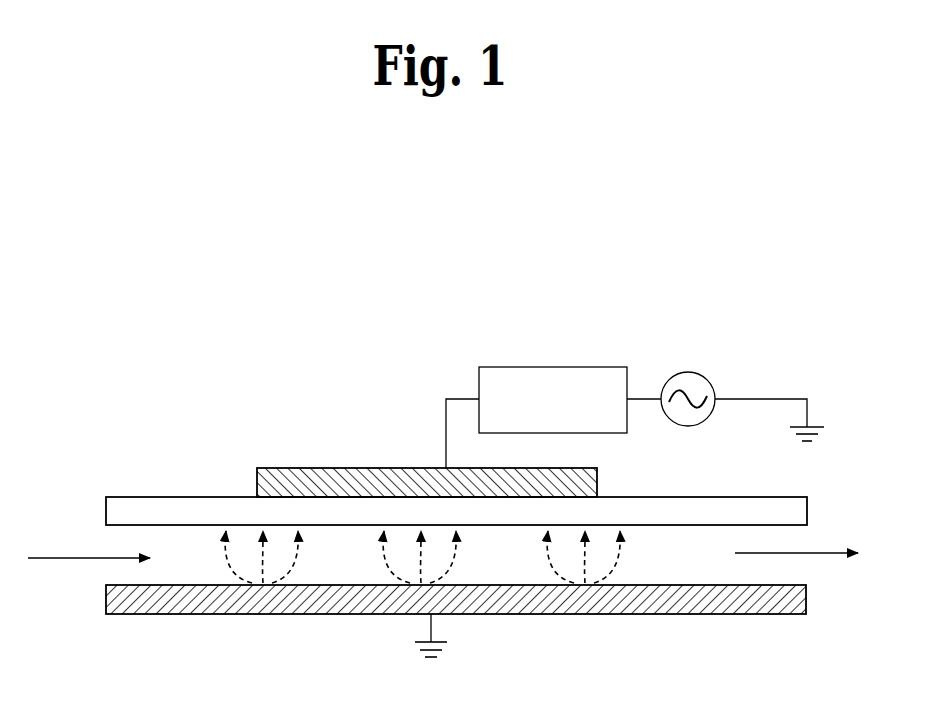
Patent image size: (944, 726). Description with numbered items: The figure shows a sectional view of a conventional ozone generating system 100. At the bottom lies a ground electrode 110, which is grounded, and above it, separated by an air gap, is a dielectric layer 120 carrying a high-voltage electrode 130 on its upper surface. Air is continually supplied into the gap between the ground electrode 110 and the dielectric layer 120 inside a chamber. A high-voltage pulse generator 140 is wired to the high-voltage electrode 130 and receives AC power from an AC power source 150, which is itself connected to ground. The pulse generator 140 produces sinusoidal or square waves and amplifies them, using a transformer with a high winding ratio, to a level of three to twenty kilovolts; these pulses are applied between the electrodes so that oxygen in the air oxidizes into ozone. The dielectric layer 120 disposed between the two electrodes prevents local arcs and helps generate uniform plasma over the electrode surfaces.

The ozone generating system 100 is at (790, 297).
The ground electrode 110 is at (170, 597).
The dielectric layer 120 is at (114, 506).
The high-voltage electrode 130 is at (298, 483).
The high-voltage pulse generator 140 is at (558, 373).
The AC power source 150 is at (687, 379).